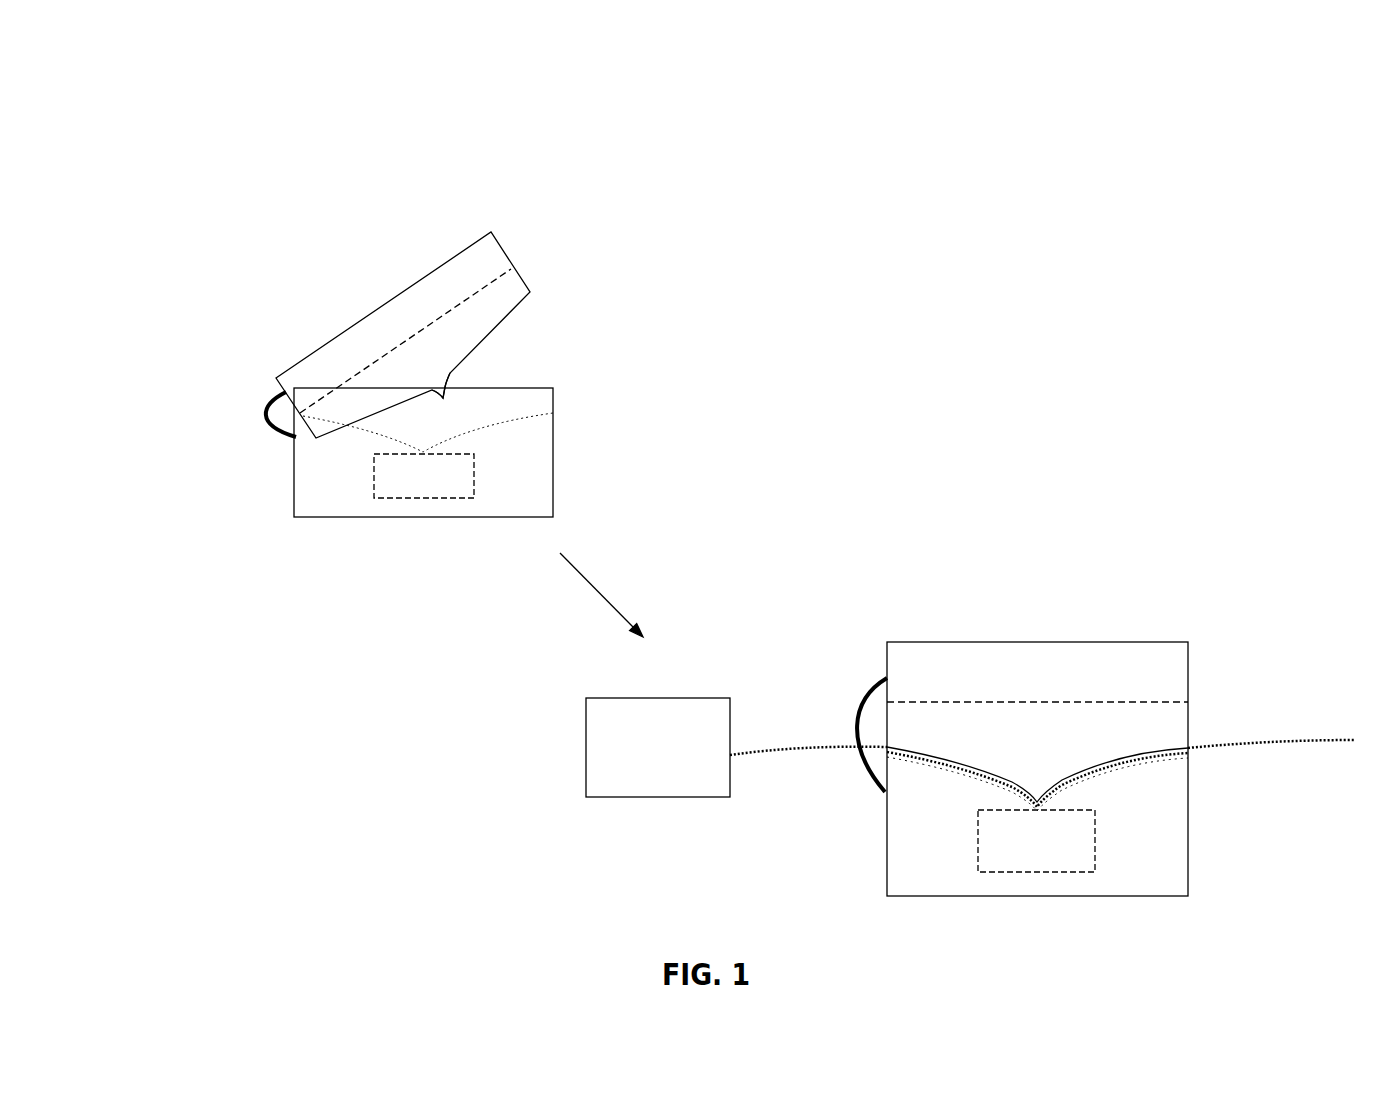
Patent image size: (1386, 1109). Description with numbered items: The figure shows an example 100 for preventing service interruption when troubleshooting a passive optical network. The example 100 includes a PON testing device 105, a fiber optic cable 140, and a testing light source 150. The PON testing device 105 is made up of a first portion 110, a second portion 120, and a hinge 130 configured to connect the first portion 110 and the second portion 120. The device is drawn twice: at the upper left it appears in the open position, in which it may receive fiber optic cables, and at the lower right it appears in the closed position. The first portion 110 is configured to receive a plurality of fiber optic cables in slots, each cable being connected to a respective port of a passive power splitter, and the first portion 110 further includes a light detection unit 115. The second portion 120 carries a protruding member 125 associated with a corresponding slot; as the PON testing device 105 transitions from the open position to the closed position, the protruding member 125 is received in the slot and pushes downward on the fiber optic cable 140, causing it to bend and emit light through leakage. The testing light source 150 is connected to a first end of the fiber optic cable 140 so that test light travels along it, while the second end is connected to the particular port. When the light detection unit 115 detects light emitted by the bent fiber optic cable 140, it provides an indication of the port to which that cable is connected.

The example 100 is at (212, 91).
The PON testing device 105 is at (384, 243).
The first portion 110 is at (553, 478).
The light detection unit 115 is at (428, 483).
The second portion 120 is at (497, 236).
The protruding member 125 is at (447, 387).
The hinge 130 is at (265, 415).
The fiber optic cable 140 is at (788, 747).
The testing light source 150 is at (639, 786).